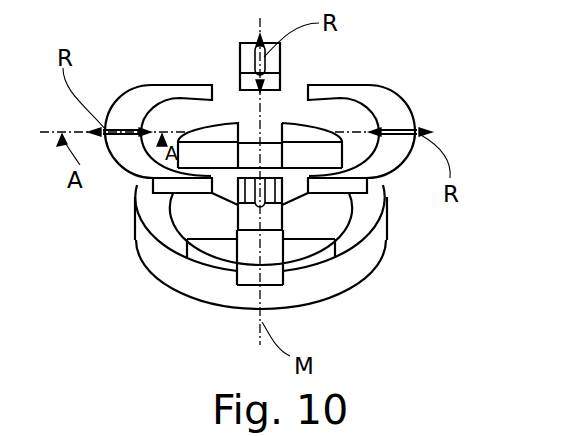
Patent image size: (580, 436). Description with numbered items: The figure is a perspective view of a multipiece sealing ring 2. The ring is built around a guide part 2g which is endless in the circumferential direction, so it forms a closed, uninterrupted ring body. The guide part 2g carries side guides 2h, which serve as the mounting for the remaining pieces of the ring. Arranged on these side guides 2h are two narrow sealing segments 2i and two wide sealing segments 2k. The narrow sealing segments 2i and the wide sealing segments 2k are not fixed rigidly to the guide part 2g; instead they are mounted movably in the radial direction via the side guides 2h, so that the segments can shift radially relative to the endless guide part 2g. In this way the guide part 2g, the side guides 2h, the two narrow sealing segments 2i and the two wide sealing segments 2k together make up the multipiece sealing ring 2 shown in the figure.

The multipiece sealing ring 2 is at (487, 62).
The guide part 2g is at (360, 259).
The side guides 2h is at (231, 129).
The narrow sealing segments 2i is at (273, 68).
The wide sealing segments 2k is at (140, 163).